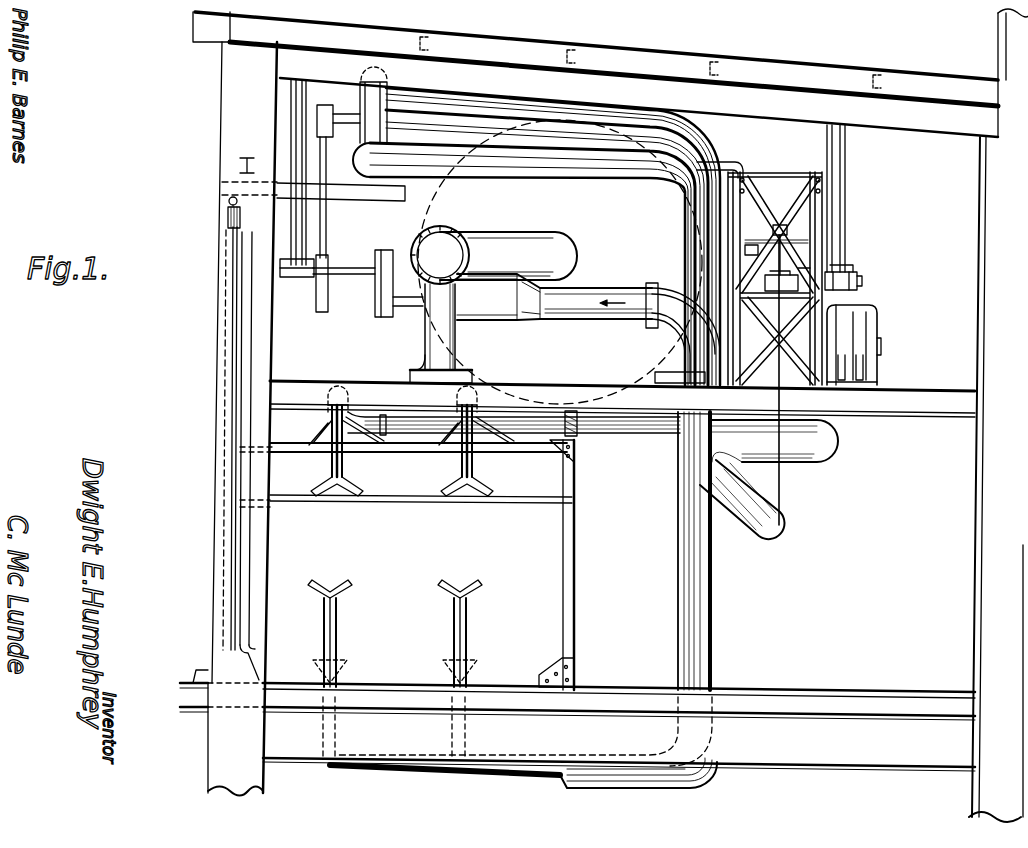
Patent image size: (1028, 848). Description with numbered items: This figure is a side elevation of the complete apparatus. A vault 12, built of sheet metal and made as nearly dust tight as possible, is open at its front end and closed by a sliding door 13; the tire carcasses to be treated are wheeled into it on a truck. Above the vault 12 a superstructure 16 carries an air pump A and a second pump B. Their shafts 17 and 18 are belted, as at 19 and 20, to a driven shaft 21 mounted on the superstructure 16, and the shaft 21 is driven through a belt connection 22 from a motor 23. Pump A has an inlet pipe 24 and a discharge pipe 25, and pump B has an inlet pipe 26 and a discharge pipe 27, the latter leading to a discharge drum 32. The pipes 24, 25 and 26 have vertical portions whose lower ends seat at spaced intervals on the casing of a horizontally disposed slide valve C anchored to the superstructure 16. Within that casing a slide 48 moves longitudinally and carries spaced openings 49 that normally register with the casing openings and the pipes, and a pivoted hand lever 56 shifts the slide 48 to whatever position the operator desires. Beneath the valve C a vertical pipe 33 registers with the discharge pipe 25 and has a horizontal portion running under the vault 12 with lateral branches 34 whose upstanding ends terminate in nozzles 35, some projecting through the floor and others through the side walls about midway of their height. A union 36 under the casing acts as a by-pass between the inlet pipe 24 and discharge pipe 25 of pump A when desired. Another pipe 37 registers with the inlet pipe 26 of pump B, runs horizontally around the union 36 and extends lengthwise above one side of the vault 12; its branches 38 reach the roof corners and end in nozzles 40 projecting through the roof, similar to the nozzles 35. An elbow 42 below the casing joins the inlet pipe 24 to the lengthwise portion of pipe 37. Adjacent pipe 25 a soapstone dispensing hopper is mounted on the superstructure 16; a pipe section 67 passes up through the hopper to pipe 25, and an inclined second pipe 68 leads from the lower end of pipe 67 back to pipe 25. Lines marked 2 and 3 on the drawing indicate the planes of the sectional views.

The section line 2- 2 is at (297, 782).
The section line 3- 3 is at (663, 525).
The vault 12 is at (483, 565).
The door 13 is at (221, 387).
The superstructure 16 is at (622, 399).
The shaft 17 is at (387, 118).
The shaft 18 is at (413, 308).
The belt 19 is at (328, 218).
The belt 20 is at (378, 286).
The driven shaft 21 is at (360, 266).
The belt connection 22 is at (812, 266).
The motor 23 is at (879, 325).
The inlet pipe 24 is at (507, 110).
The discharge pipe 25 is at (540, 160).
The inlet pipe 26 is at (618, 290).
The discharge pipe 27 is at (543, 257).
The discharge drum 32 is at (608, 213).
The vertical pipe 33 is at (718, 537).
The lateral branches 34 is at (340, 628).
The nozzles 35 is at (461, 591).
The union 36 is at (787, 513).
The pipe 37 is at (838, 451).
The branches 38 is at (500, 410).
The nozzle 40 is at (478, 490).
The elbow 42 is at (637, 432).
The slide 48 is at (829, 185).
The openings 49 is at (780, 195).
The pivoted hand lever 56 is at (782, 472).
The pipe section 67 is at (733, 165).
The second pipe 68 is at (686, 279).
The air pump A is at (386, 103).
The second pump B is at (457, 343).
The slide valve C is at (672, 377).